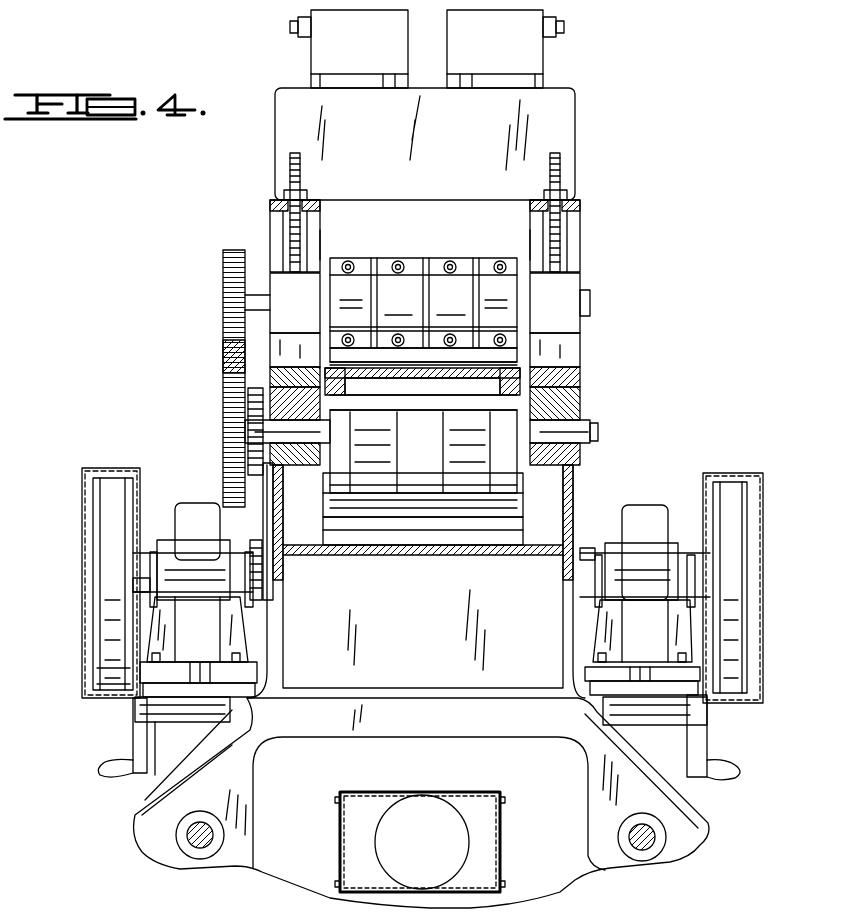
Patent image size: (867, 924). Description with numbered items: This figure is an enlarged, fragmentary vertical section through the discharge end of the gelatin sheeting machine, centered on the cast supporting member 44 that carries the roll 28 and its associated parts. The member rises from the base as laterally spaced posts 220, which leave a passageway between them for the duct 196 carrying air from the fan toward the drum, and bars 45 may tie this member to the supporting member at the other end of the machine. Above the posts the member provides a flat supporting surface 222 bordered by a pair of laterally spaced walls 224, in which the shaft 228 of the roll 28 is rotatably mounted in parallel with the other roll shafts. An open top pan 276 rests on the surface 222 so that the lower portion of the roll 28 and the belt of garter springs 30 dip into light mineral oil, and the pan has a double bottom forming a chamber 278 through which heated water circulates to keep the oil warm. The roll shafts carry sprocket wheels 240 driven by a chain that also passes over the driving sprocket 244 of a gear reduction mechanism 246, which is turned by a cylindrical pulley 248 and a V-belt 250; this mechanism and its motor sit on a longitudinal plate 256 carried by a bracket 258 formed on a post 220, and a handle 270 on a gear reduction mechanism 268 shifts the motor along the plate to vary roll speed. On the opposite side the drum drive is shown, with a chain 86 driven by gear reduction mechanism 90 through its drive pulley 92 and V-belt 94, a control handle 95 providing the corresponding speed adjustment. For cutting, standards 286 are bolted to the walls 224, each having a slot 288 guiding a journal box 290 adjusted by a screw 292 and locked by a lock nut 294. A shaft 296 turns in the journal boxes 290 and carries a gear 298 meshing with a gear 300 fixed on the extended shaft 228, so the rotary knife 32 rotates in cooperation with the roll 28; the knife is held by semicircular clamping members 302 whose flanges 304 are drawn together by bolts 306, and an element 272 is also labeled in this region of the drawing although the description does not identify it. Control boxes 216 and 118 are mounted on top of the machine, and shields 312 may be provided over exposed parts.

The control box 216 is at (352, 52).
The control box 118 is at (500, 52).
The lock nut 294 is at (284, 195).
The standard 286 is at (272, 214).
The slot 288 is at (272, 230).
The screw 292 is at (315, 250).
The journal box 290 is at (308, 311).
The semicircular clamping member 302 is at (412, 311).
The radially directed flange 304 is at (465, 311).
The bolt 306 is at (400, 262).
The roll 272 is at (360, 380).
The rotary knife 32 is at (410, 380).
The garter spring 30 is at (455, 380).
The roll 28 is at (430, 467).
The sprocket wheel 240 is at (245, 432).
The shaft 228 is at (598, 430).
The shaft 296 is at (223, 300).
The gear 298 is at (223, 330).
The gear 300 is at (248, 400).
The driving sprocket 244 is at (262, 590).
The gear reduction mechanism 246 is at (200, 505).
The shield 312 is at (82, 540).
The pulley 248 is at (95, 655).
The V-belt 250 is at (95, 687).
The handle 270 is at (133, 740).
The bracket 258 is at (195, 735).
The gear reduction mechanism 90 is at (652, 539).
The V-belt 94 is at (742, 502).
The drive pulley 92 is at (747, 540).
The chain 86 is at (590, 600).
The control handle 95 is at (707, 735).
The wall 224 is at (578, 505).
The supporting surface 222 is at (395, 560).
The chamber 278 is at (435, 560).
The pan 276 is at (475, 560).
The cast supporting member 44 is at (432, 725).
The plate 256 is at (247, 702).
The gear reduction mechanism 268 is at (252, 746).
The duct 196 is at (435, 800).
The post 220 is at (257, 818).
The bar 45 is at (205, 850).